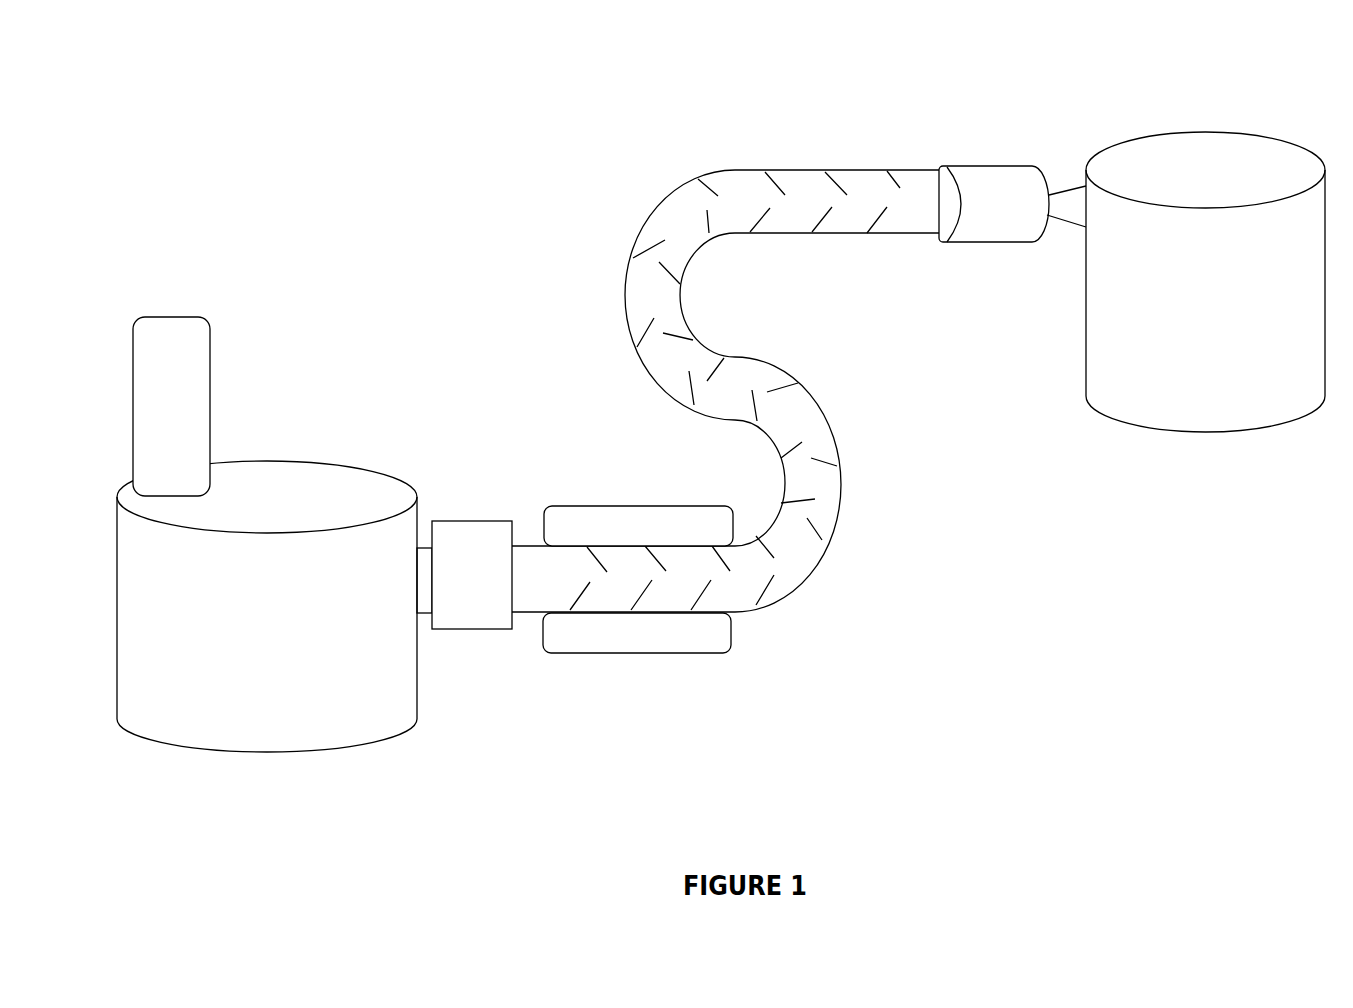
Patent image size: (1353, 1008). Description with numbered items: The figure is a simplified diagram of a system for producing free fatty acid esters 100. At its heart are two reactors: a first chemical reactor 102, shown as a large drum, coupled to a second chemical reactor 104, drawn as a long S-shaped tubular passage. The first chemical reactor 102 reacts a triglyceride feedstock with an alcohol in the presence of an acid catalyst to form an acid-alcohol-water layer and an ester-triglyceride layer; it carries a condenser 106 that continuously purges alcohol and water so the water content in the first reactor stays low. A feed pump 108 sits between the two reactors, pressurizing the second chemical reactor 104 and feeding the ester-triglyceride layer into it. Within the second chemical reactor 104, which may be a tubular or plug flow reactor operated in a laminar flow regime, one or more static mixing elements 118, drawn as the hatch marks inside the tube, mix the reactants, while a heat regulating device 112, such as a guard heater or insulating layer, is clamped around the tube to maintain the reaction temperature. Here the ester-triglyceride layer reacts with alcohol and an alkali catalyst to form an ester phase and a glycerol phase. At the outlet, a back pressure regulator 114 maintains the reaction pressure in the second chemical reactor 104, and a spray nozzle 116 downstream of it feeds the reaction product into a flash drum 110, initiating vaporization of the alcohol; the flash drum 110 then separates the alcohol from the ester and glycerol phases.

The system for producing free fatty acid esters 100 is at (721, 410).
The first chemical reactor 102 is at (281, 643).
The second chemical reactor 104 is at (653, 210).
The condenser 106 is at (168, 350).
The feed pump 108 is at (473, 537).
The flash drum 110 is at (1228, 294).
The heat regulating device 112 is at (582, 527).
The back pressure regulator 114 is at (1000, 201).
The spray nozzle 116 is at (1071, 205).
The static mixing elements 118 is at (790, 170).